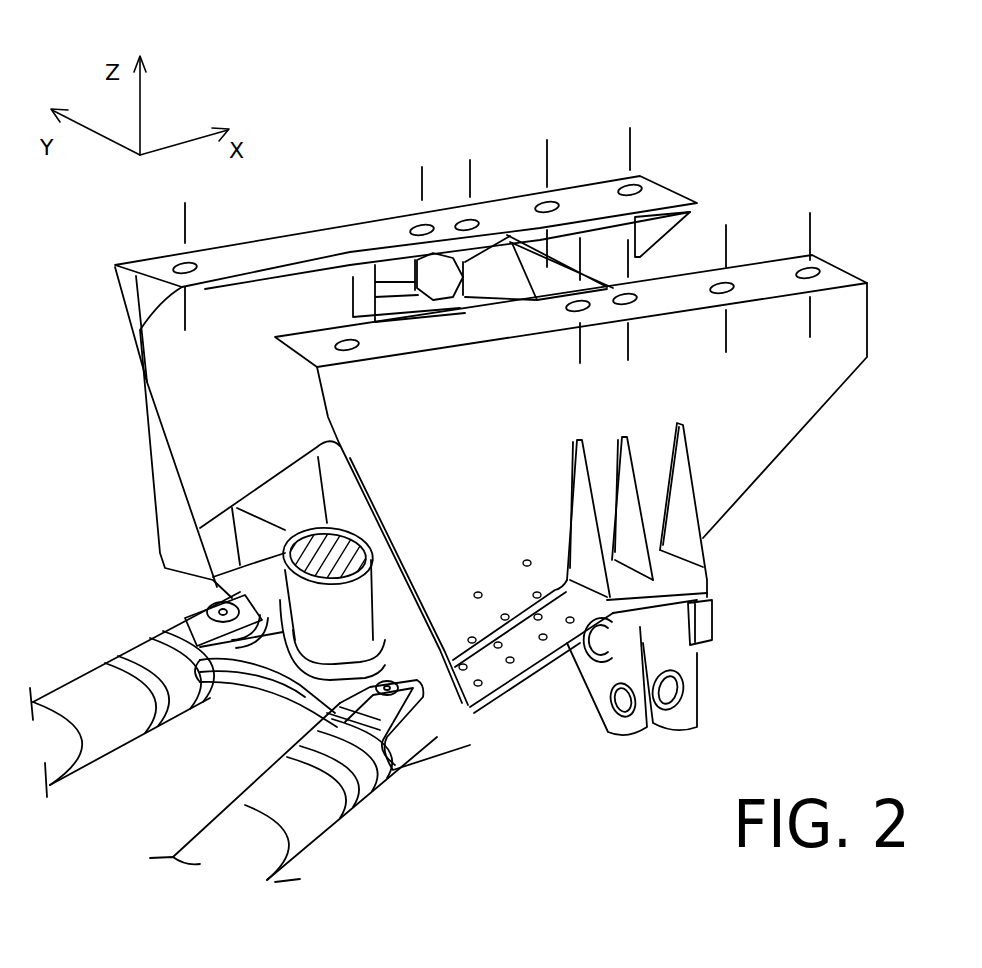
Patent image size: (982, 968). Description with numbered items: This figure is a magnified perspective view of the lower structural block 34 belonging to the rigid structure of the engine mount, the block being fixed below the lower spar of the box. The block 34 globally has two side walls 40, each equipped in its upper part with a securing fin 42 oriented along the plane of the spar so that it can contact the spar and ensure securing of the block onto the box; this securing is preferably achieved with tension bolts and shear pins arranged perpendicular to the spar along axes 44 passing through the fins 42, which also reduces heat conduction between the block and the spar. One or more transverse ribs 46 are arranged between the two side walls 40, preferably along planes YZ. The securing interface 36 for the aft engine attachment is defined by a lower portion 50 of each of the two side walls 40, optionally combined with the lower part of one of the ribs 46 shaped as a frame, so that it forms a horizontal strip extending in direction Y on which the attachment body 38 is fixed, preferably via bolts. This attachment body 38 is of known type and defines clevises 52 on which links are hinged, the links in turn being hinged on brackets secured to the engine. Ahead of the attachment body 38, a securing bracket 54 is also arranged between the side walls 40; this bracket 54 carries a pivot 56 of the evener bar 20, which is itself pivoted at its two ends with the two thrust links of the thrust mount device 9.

The thrust mount device 9 is at (112, 737).
The evener bar 20 is at (282, 680).
The structural block 34 is at (279, 186).
The securing interface 36 is at (710, 612).
The attachment body 38 is at (696, 626).
The side walls 40 is at (132, 380).
The securing fin 42 is at (400, 337).
The axes 44 is at (547, 165).
The transverse ribs 46 is at (448, 268).
The lower portion 50 is at (707, 549).
The clevises 52 is at (541, 688).
The securing bracket 54 is at (213, 582).
The pivot 56 is at (352, 540).